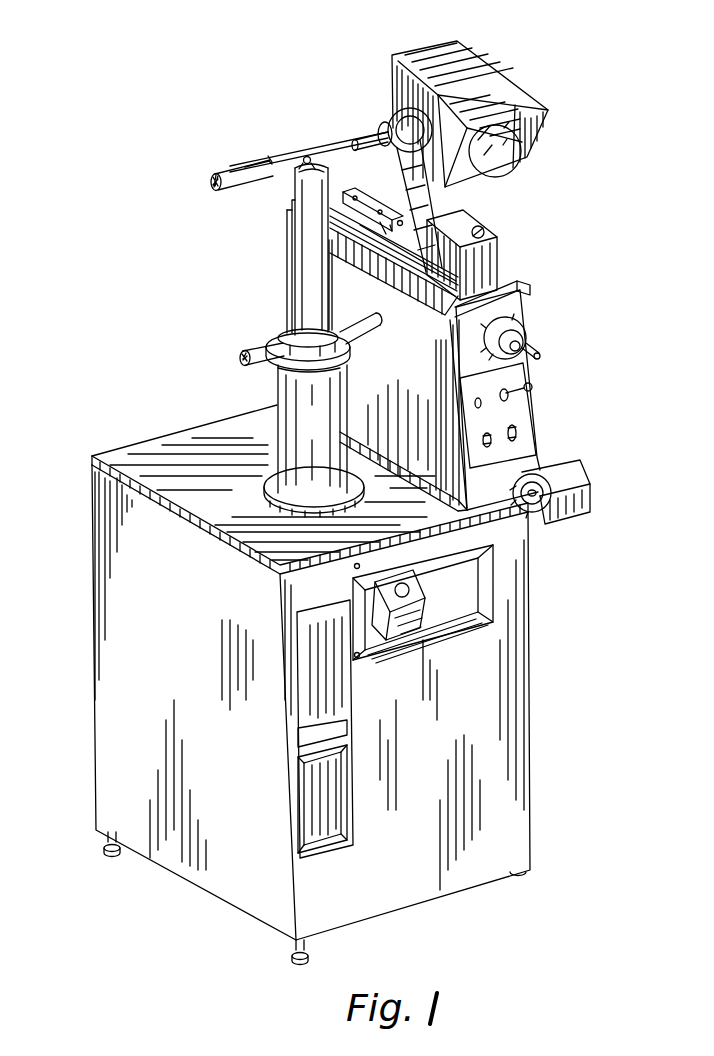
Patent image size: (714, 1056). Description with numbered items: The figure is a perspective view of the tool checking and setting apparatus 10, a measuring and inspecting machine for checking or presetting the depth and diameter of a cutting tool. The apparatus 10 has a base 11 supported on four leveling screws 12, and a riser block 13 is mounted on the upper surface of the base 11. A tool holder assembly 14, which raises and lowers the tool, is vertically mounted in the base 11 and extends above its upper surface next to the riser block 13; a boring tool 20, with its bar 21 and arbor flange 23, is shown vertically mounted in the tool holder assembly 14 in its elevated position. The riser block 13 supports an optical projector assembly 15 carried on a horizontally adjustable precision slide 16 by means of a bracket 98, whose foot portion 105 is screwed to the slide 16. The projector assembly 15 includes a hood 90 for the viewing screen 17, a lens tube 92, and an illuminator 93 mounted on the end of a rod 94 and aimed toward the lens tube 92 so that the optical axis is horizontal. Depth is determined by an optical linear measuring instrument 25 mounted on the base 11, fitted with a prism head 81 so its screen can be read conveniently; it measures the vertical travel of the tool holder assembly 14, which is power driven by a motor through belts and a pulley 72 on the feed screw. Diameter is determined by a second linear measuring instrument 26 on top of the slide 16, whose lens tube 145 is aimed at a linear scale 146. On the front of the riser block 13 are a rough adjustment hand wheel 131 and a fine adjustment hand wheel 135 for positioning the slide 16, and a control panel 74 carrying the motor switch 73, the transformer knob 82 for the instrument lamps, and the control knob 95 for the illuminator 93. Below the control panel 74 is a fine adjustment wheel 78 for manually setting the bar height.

The tool checking and setting apparatus 10 is at (176, 430).
The base 11 is at (94, 554).
The leveling screws 12 is at (113, 863).
The riser block 13 is at (538, 444).
The tool holder assembly 14 is at (258, 340).
The optical projector assembly 15 is at (489, 99).
The precision slide 16 is at (514, 282).
The viewing screen 17 is at (502, 152).
The boring tool 20 is at (283, 252).
The bar 21 is at (292, 285).
The arbor flange 23 is at (282, 328).
The linear measuring instrument 25 is at (382, 618).
The linear measuring instrument 26 is at (500, 252).
The pulley 72 is at (305, 157).
The switch 73 is at (533, 386).
The control panel 74 is at (520, 375).
The fine adjustment wheel 78 is at (540, 484).
The prism head 81 is at (414, 616).
The knob 82 is at (482, 440).
The hood 90 is at (540, 92).
The lens tube 92 is at (366, 136).
The illuminator 93 is at (236, 184).
The rod 94 is at (334, 130).
The control knob 95 is at (514, 428).
The bracket 98 is at (459, 204).
The foot portion 105 is at (402, 216).
The rough adjustment hand wheel 131 is at (523, 336).
The fine adjustment hand wheel 135 is at (522, 324).
The lens tube 145 is at (418, 280).
The linear scale 146 is at (435, 314).